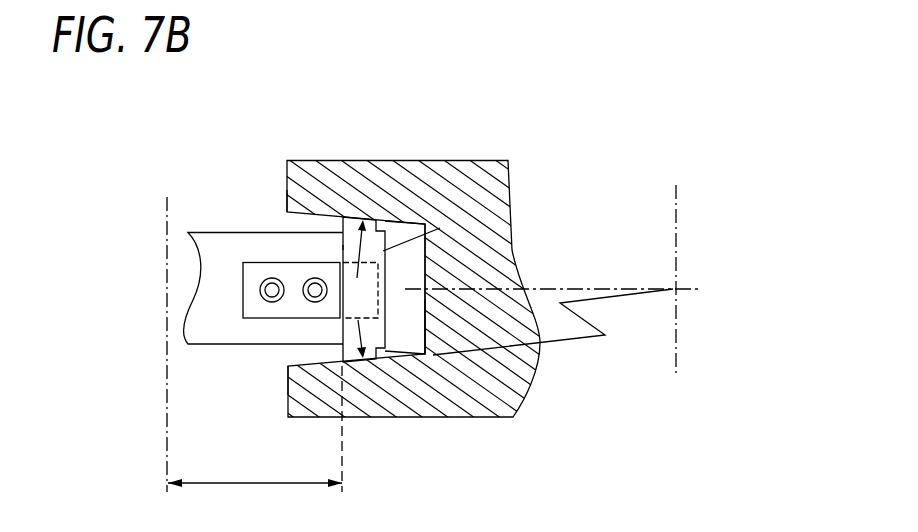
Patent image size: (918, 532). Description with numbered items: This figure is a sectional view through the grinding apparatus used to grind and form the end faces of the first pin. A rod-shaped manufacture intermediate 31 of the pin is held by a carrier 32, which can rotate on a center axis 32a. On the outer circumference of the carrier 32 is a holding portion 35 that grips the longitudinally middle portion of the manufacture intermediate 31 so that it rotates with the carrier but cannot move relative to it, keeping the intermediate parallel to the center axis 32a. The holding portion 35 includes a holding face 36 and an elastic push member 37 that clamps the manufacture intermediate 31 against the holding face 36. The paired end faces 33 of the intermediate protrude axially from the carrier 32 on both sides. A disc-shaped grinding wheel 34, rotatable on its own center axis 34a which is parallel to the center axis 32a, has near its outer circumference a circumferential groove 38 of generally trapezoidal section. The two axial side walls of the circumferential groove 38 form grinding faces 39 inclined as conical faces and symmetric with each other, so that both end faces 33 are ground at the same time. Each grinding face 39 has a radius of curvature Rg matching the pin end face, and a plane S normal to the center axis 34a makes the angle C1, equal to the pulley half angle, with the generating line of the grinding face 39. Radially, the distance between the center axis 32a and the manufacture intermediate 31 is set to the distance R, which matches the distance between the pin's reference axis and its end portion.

The manufacture intermediate 31 is at (380, 220).
The carrier 32 is at (209, 227).
The center axis 32a is at (167, 209).
The end faces 33 is at (341, 213).
The grinding wheel 34 is at (488, 156).
The center axis 34a is at (676, 205).
The holding portion 35 is at (400, 224).
The holding face 36 is at (432, 228).
The push member 37 is at (367, 280).
The circumferential groove 38 is at (421, 331).
The grinding faces 39 is at (305, 210).
The radius of curvature Rg is at (342, 247).
The angle C1 is at (598, 298).
The plane S is at (621, 289).
The distance R is at (255, 429).